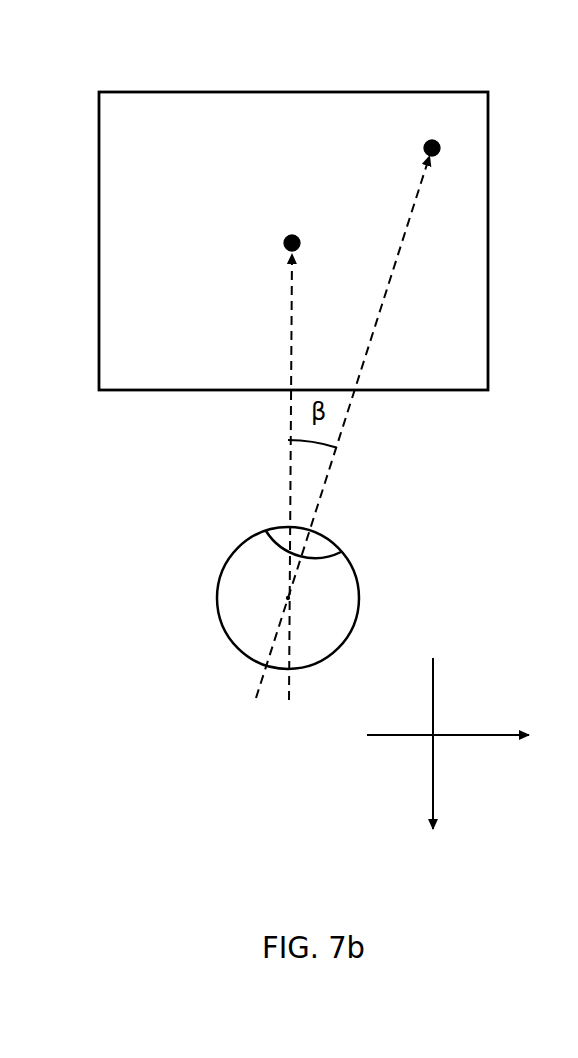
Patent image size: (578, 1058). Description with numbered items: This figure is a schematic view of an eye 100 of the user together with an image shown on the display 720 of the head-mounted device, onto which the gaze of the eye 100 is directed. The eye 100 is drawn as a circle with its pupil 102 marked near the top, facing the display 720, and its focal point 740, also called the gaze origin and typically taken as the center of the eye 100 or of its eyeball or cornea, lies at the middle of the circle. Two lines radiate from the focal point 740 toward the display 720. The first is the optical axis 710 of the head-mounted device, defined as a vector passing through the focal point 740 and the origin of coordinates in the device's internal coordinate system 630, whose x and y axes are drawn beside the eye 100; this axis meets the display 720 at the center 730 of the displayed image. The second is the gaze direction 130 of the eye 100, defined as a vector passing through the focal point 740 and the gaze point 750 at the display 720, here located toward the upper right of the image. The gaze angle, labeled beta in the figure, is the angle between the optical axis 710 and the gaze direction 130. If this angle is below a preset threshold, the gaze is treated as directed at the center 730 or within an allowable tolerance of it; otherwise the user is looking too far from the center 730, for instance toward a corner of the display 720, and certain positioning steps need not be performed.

The display 720 is at (175, 91).
The center of image 730 is at (290, 232).
The gaze point 750 is at (433, 138).
The optical axis 710 is at (292, 353).
The gaze direction 130 is at (400, 253).
The eye 100 is at (198, 570).
The pupil 102 is at (322, 545).
The focal point 740 is at (294, 594).
The coordinate system 630 is at (478, 712).